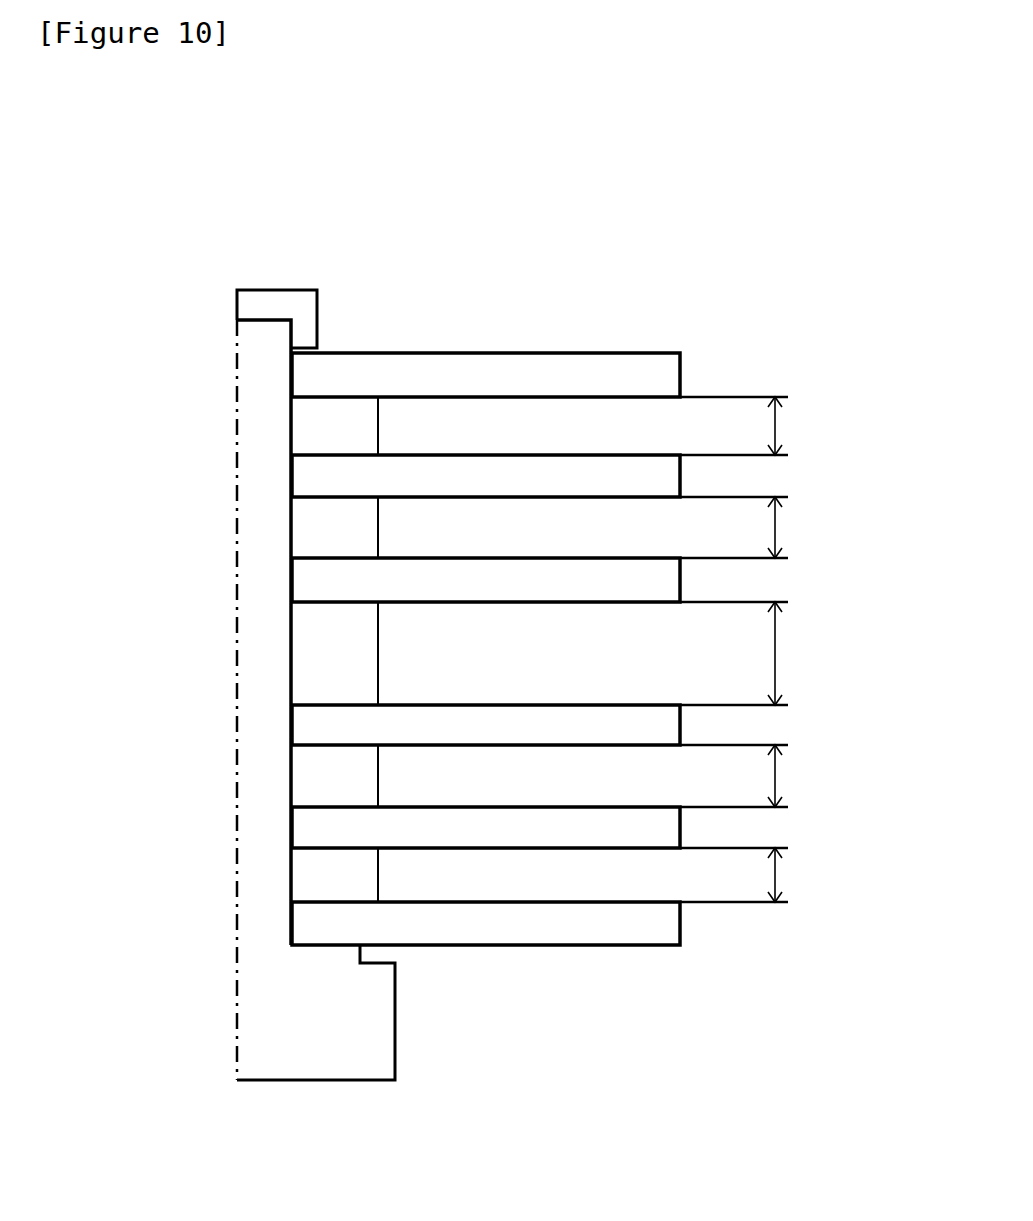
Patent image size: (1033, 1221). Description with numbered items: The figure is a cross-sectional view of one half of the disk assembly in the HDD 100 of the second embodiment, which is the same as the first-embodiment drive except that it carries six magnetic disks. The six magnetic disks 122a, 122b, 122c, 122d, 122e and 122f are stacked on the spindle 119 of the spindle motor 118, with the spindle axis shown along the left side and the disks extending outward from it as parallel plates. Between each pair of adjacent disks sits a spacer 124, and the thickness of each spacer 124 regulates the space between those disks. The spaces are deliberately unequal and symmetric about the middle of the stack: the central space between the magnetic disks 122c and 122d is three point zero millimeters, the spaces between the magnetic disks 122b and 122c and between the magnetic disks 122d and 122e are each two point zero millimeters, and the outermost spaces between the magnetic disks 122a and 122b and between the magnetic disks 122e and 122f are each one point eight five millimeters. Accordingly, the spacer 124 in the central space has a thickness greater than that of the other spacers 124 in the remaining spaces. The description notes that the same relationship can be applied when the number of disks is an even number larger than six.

The HDD 100 is at (393, 323).
The spindle motor 118 is at (353, 1080).
The spindle 119 is at (237, 672).
The magnetic disk 122a is at (486, 923).
The magnetic disk 122b is at (486, 827).
The magnetic disk 122c is at (486, 725).
The magnetic disk 122d is at (486, 580).
The magnetic disk 122e is at (486, 476).
The magnetic disk 122f is at (486, 375).
The spacer 124 is at (378, 448).